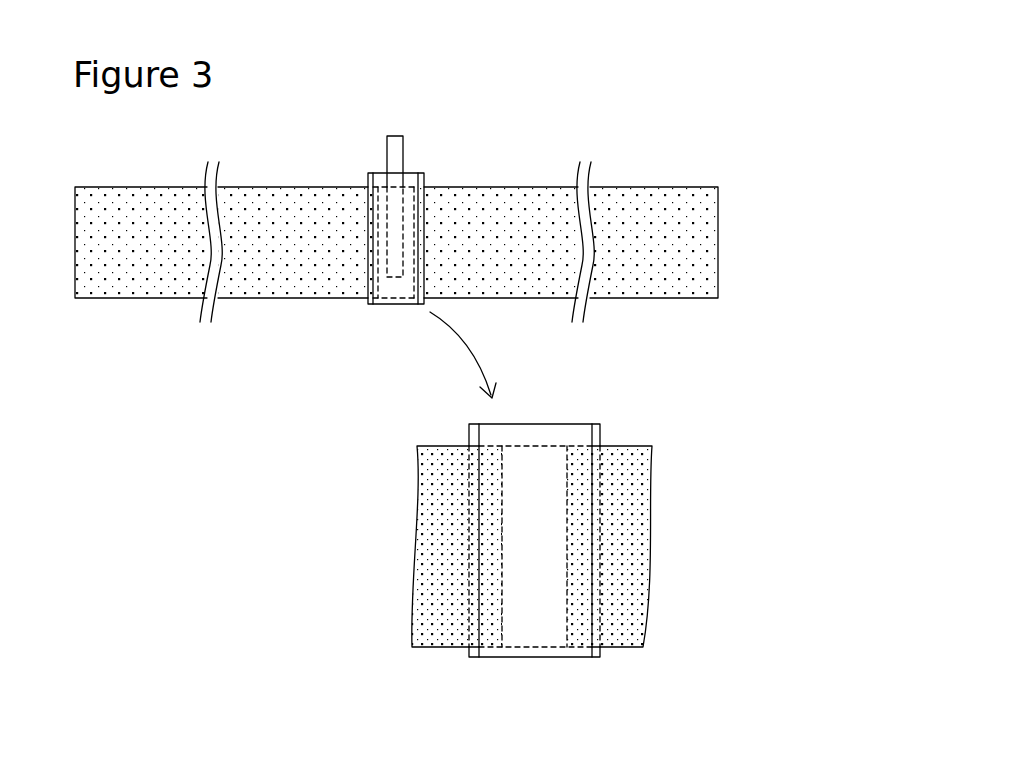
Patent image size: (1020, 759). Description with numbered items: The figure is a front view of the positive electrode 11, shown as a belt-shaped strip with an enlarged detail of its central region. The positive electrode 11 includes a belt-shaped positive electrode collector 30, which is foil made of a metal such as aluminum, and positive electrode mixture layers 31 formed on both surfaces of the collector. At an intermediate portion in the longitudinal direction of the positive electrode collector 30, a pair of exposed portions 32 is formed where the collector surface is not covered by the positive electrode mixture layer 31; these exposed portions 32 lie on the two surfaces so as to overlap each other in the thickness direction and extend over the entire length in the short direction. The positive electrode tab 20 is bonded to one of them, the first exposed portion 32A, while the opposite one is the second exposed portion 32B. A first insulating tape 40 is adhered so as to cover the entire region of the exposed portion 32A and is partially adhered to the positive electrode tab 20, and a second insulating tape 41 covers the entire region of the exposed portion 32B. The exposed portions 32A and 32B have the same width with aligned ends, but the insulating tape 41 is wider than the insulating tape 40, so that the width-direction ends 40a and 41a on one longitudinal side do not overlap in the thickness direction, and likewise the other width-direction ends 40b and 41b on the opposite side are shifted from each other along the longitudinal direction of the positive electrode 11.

The positive electrode 11 is at (692, 173).
The positive electrode tab 20 is at (405, 147).
The positive electrode collector 30 is at (262, 300).
The positive electrode mixture layer 31 is at (318, 290).
The exposed portion 32 is at (399, 304).
The first exposed portion 32A is at (516, 540).
The second exposed portion 32B is at (540, 636).
The first insulating tape 40 is at (378, 173).
The width-direction end of first insulating tape 40a is at (596, 660).
The other width-direction end of first insulating tape 40b is at (474, 660).
The second insulating tape 41 is at (424, 173).
The width-direction end of second insulating tape 41a is at (601, 657).
The other width-direction end of second insulating tape 41b is at (469, 657).